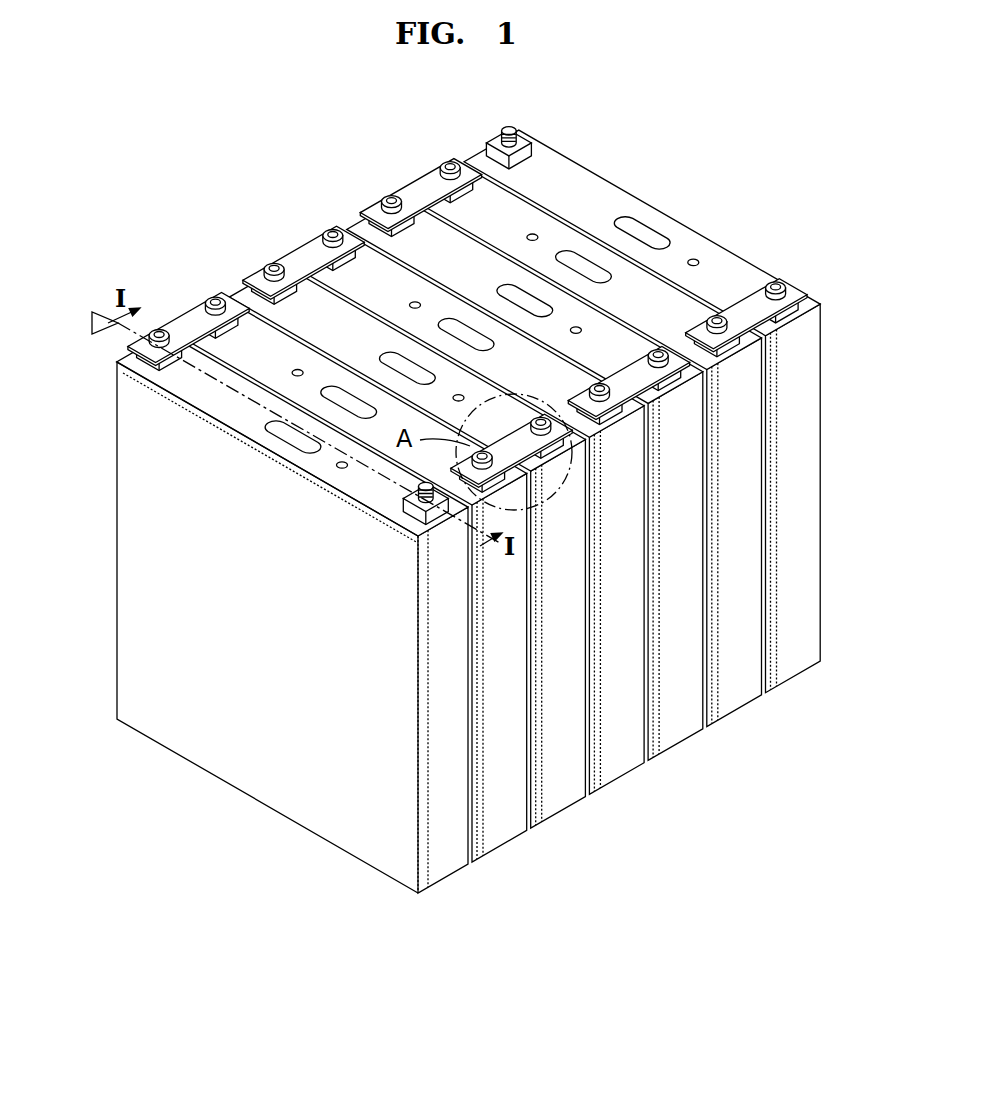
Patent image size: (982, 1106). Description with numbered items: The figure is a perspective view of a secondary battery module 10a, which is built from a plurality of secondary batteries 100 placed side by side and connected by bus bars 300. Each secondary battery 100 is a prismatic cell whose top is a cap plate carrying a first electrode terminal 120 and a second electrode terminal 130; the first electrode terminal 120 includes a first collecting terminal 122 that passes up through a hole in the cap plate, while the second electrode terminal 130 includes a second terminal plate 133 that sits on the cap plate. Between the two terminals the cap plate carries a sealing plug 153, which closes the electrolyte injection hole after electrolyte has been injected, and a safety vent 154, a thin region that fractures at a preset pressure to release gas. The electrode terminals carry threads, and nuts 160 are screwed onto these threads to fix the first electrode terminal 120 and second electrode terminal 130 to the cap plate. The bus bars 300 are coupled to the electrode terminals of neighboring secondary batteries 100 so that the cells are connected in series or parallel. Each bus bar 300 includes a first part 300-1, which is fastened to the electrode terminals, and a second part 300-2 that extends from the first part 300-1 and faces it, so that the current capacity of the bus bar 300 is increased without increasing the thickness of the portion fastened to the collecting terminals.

The secondary battery module 10a is at (444, 507).
The secondary battery 100 is at (283, 613).
The first electrode terminal 120 is at (112, 395).
The first collecting terminal 122 is at (143, 350).
The second electrode terminal 130 is at (416, 527).
The second terminal plate 133 is at (407, 510).
The sealing plug 153 is at (338, 469).
The safety vent 154 is at (291, 442).
The nut 160 is at (782, 290).
The bus bar 300 is at (189, 278).
The first part 300-1 is at (187, 325).
The second part 300-2 is at (236, 300).